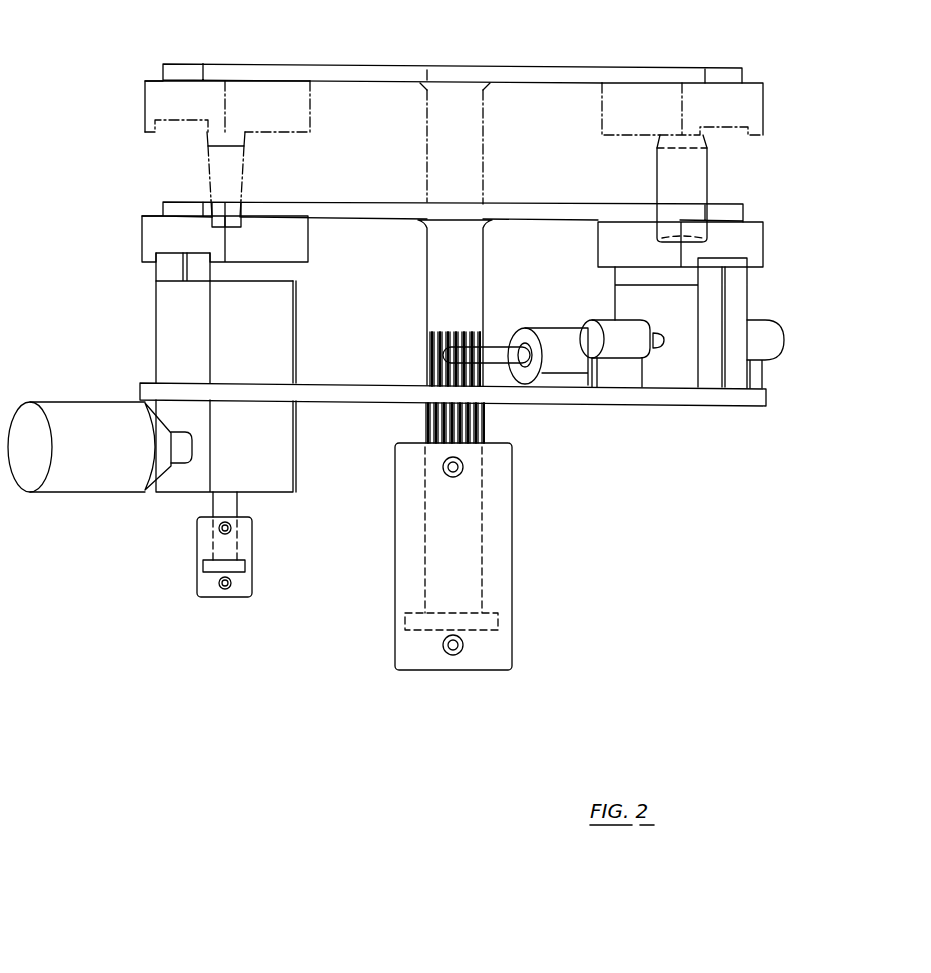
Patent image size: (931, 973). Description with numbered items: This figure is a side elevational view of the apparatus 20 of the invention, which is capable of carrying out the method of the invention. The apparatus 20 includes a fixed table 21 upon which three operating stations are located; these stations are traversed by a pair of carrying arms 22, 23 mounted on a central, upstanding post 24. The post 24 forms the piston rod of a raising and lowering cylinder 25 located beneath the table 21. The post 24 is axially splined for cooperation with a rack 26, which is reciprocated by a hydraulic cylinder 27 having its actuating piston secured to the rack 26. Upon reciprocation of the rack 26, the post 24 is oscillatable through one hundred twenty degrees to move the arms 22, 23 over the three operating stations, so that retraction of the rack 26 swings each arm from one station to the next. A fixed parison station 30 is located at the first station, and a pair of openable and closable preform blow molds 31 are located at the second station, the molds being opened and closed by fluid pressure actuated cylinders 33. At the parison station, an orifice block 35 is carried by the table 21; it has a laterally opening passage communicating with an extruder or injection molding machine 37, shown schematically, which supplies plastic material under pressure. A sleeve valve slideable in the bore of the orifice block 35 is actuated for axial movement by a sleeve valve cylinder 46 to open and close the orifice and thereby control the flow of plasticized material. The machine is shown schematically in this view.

The apparatus 20 is at (566, 454).
The fixed table 21 is at (746, 401).
The carrying arm 22 is at (331, 65).
The carrying arm 23 is at (582, 66).
The central upstanding post 24 is at (437, 124).
The raising and lowering cylinder 25 is at (505, 601).
The rack 26 is at (440, 355).
The hydraulic cylinder 27 is at (546, 330).
The fixed parison station 30 is at (142, 305).
The preform blow molds 31 is at (667, 378).
The fluid pressure actuated cylinders 33 is at (593, 326).
The orifice block 35 is at (278, 473).
The extruder or injection molding machine 37 is at (72, 482).
The sleeve valve cylinder 46 is at (243, 587).